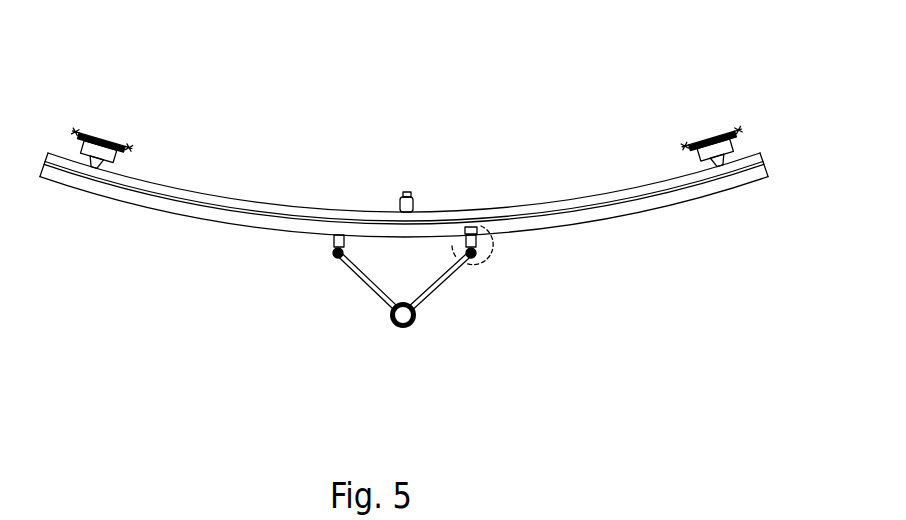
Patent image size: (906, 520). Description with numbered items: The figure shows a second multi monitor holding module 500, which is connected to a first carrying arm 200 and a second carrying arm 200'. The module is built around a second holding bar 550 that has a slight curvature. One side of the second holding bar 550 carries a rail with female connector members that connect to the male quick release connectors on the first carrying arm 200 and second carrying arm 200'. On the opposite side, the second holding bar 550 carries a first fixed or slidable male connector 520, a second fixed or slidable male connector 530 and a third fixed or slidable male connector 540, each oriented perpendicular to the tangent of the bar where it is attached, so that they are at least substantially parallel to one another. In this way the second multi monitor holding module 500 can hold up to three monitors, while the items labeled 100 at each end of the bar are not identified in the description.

The mounting fixture 100 is at (109, 124).
The second multi monitor holding module 500 is at (155, 213).
The first fixed or slidable male connector 520 is at (97, 163).
The second fixed or slidable male connector 530 is at (714, 168).
The third fixed or slidable male connector 540 is at (401, 203).
The second holding bar 550 is at (488, 226).
The first carrying arm 200 is at (345, 304).
The second carrying arm 200' is at (455, 329).